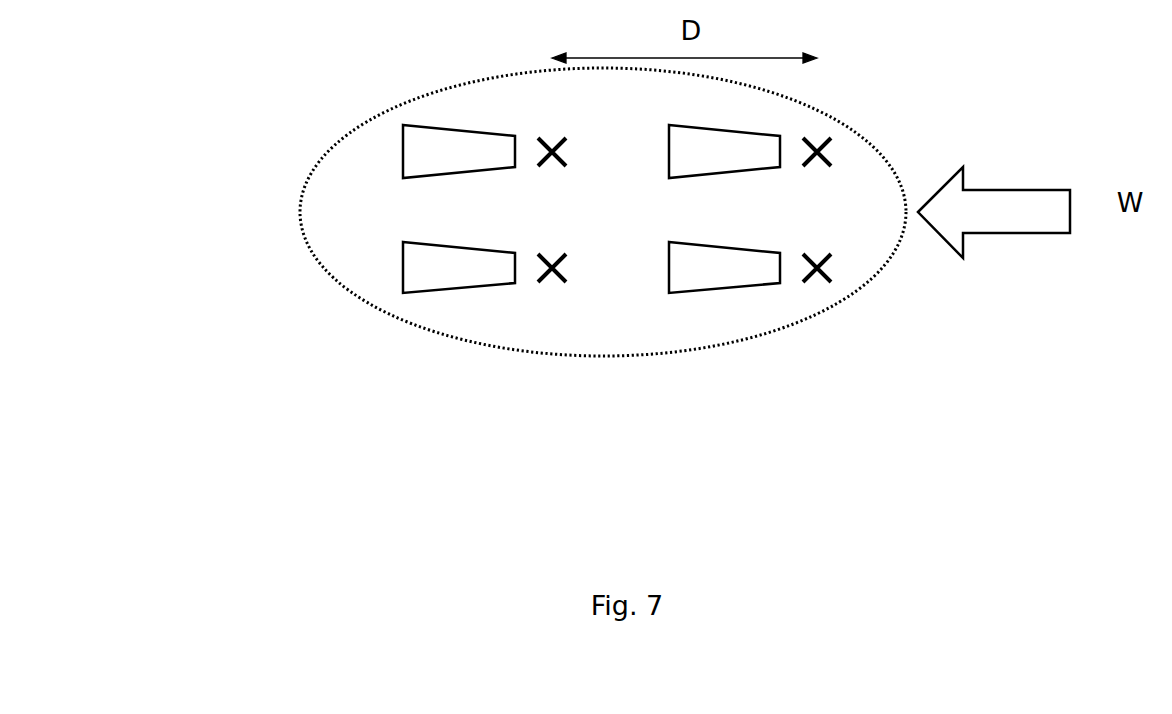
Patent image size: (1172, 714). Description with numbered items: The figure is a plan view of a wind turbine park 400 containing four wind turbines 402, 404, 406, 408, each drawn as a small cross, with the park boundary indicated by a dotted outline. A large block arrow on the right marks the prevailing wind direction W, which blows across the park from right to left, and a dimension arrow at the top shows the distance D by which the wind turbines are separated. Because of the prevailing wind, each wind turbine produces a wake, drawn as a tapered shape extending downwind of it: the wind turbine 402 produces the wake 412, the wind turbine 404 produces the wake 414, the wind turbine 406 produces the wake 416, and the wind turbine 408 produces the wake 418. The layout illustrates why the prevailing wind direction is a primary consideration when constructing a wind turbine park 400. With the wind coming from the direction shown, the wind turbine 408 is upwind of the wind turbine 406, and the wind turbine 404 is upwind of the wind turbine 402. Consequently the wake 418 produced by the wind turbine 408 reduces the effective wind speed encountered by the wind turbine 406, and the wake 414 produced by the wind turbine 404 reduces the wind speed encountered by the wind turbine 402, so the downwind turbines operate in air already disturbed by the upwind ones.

The wind turbine park 400 is at (288, 145).
The wind turbine 402 is at (552, 272).
The wind turbine 404 is at (816, 272).
The wind turbine 406 is at (553, 163).
The wind turbine 408 is at (818, 162).
The wake 412 is at (417, 273).
The wake 414 is at (713, 272).
The wake 416 is at (423, 144).
The wake 418 is at (760, 145).